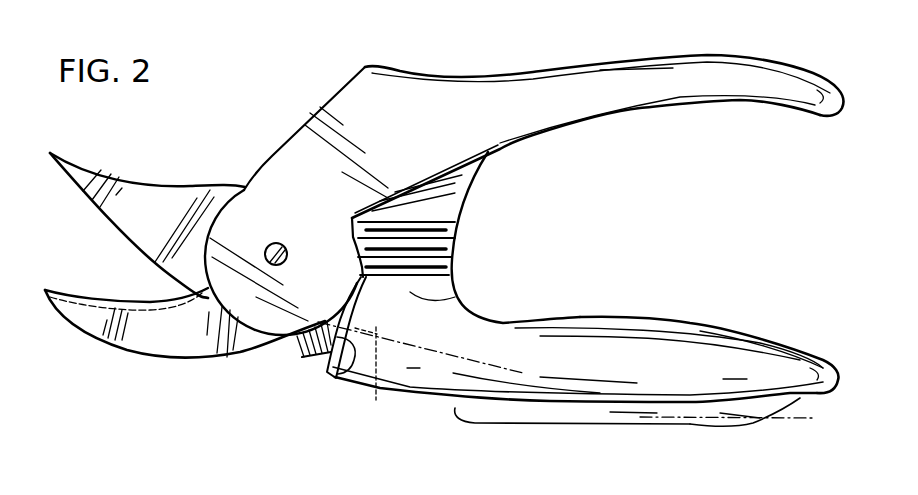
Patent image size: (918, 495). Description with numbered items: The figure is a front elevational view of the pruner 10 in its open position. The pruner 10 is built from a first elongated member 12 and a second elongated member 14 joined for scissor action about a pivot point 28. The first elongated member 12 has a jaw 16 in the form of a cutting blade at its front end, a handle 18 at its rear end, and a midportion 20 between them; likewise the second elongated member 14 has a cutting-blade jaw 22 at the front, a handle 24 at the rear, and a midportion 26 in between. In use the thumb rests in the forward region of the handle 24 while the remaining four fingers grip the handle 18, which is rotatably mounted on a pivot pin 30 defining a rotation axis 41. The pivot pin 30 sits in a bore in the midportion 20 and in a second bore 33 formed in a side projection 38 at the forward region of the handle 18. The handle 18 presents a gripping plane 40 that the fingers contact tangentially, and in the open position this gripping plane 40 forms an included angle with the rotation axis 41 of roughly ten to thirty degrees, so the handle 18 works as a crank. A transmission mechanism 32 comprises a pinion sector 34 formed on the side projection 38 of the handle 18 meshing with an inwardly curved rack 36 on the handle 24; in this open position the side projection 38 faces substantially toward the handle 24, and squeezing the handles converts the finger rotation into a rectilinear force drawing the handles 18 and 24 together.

The pruner 10 is at (326, 92).
The first elongated member 12 is at (629, 303).
The second elongated member 14 is at (521, 65).
The jaw 16 is at (167, 193).
The handle 18 is at (718, 330).
The midportion 20 is at (297, 352).
The jaw 22 is at (160, 345).
The handle 24 is at (645, 62).
The midportion 26 is at (289, 157).
The pivot point 28 is at (285, 250).
The pivot pin 30 is at (350, 378).
The transmission mechanism 32 is at (481, 233).
The second bore 33 is at (377, 400).
The pinion sector 34 is at (449, 272).
The rack 36 is at (447, 202).
The side projection 38 is at (455, 297).
The gripping plane 40 is at (612, 425).
The rotation axis 41 is at (715, 421).